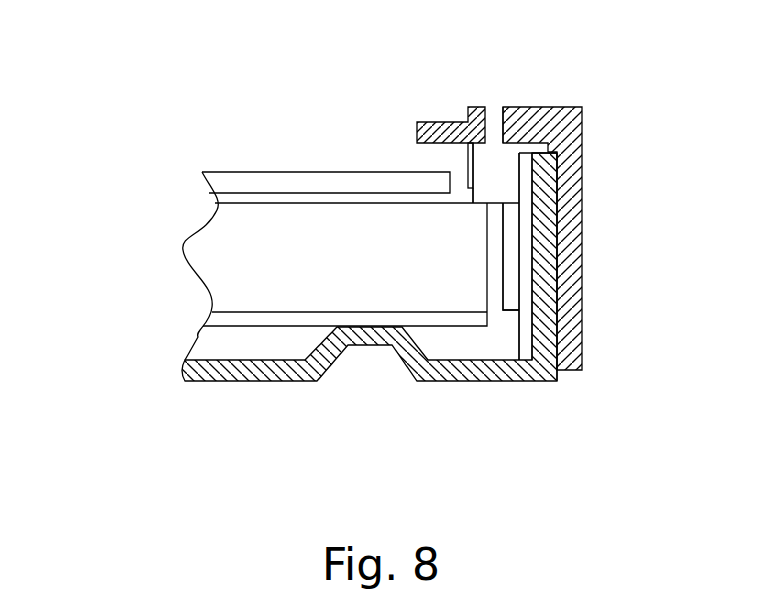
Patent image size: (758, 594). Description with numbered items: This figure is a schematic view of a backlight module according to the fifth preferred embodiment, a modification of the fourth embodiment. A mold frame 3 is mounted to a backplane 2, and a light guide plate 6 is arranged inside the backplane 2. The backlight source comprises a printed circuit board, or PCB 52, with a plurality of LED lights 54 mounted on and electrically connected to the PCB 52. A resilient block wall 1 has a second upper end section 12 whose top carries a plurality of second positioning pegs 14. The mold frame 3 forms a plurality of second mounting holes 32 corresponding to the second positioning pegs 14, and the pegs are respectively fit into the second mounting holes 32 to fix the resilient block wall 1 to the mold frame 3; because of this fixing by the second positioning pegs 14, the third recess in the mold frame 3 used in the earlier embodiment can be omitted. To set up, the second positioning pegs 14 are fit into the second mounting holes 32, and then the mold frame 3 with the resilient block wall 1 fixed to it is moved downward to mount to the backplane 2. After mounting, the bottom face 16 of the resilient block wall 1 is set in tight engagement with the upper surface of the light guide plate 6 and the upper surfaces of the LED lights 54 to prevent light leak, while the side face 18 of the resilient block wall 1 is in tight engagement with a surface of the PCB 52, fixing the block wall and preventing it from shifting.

The resilient block wall 1 is at (469, 164).
The backplane 2 is at (295, 362).
The mold frame 3 is at (583, 126).
The light guide plate 6 is at (225, 262).
The second upper end section 12 is at (499, 150).
The second positioning pegs 14 is at (490, 122).
The bottom face 16 is at (514, 215).
The side face 18 is at (522, 181).
The second mounting holes 32 is at (491, 118).
The printed circuit board (PCB) 52 is at (527, 338).
The LED lights 54 is at (512, 283).